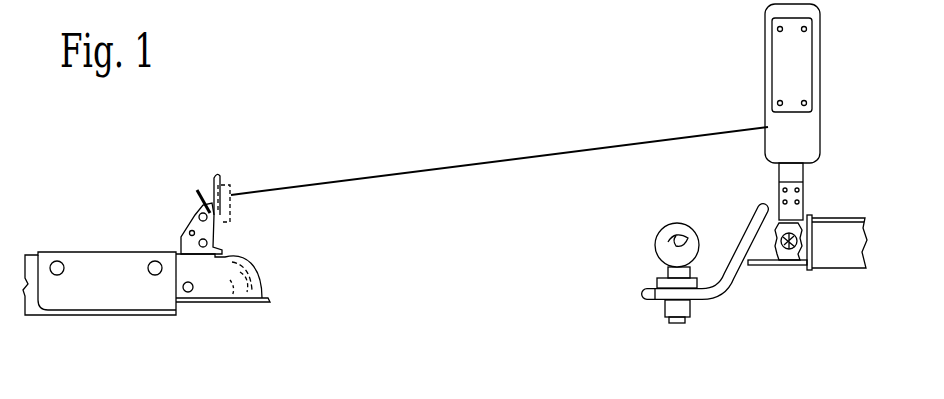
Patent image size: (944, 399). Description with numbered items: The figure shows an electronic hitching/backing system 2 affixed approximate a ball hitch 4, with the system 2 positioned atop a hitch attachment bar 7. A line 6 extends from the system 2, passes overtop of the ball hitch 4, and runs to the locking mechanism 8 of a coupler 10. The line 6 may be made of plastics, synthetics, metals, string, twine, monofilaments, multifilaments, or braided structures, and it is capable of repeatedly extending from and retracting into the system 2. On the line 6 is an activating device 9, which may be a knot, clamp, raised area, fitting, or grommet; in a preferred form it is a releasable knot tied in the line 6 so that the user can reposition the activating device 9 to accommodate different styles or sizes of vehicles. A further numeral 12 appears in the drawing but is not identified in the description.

The electronic hitching/backing system 2 is at (730, 66).
The ball hitch 4 is at (662, 249).
The line 6 is at (472, 165).
The hitch attachment bar 7 is at (762, 263).
The locking mechanism 8 is at (202, 190).
The activating device 9 is at (233, 183).
The coupler 10 is at (250, 302).
The hitch receiver 12 is at (615, 392).